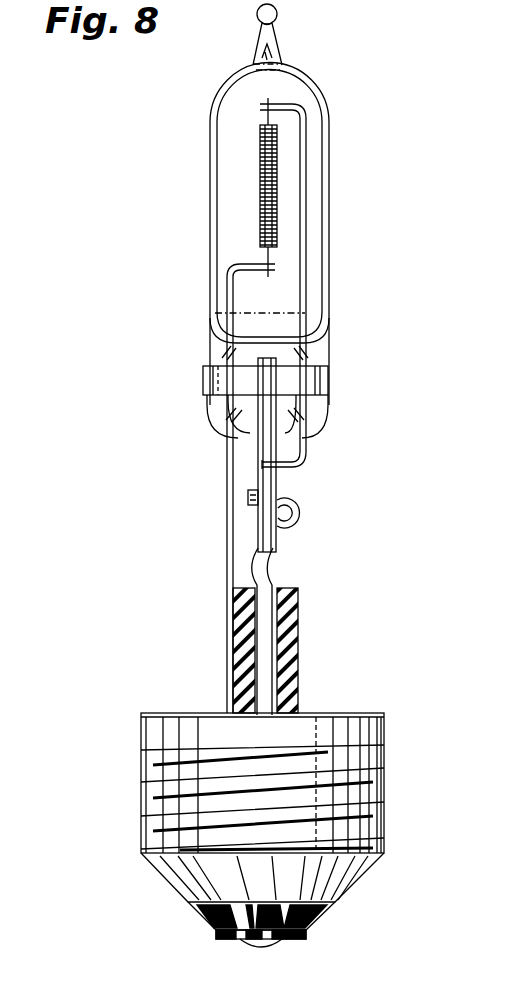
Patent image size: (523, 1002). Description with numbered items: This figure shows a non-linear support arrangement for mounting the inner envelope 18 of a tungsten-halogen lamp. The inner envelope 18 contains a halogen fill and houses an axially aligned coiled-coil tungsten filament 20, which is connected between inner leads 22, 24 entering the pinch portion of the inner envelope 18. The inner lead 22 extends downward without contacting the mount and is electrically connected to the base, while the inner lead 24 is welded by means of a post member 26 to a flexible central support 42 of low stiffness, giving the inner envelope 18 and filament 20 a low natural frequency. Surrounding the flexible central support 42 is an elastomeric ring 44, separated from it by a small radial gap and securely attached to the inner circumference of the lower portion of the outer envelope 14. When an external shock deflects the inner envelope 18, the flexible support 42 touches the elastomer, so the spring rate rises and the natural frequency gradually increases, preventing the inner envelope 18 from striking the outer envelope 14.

The outer envelope 14 is at (385, 720).
The inner envelope 18 is at (330, 163).
The tungsten filament 20 is at (260, 158).
The inner lead 22 is at (227, 452).
The inner lead 24 is at (307, 445).
The post member 26 is at (260, 452).
The flexible central support 42 is at (300, 510).
The elastomeric ring 44 is at (298, 592).